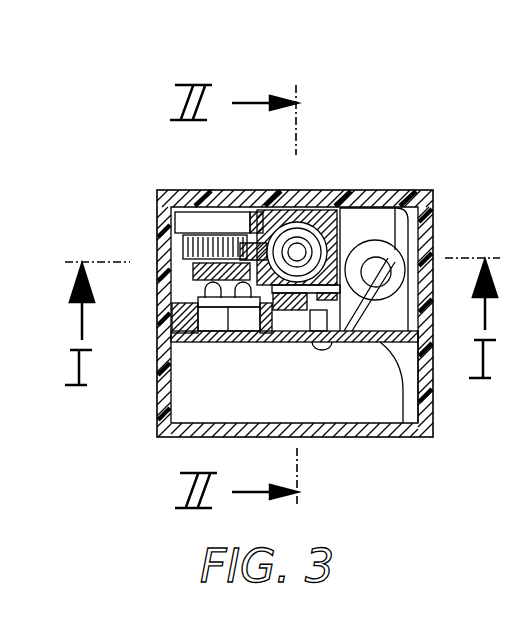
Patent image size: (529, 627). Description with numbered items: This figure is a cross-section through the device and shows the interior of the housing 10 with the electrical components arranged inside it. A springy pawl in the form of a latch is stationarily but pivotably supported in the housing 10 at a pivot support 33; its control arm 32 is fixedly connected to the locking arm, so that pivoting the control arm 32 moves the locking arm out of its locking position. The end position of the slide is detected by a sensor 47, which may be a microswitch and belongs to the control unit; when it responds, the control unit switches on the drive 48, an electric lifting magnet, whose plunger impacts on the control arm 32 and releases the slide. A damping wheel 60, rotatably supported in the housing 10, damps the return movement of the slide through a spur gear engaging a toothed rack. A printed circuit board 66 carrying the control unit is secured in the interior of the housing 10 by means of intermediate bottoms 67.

The housing 10 is at (381, 182).
The control arm 32 is at (432, 357).
The pivot support 33 is at (323, 348).
The sensor 47 is at (240, 318).
The drive 48 is at (417, 188).
The damping wheel 60 is at (207, 212).
The printed circuit board 66 is at (398, 437).
The intermediate bottoms 67 is at (173, 330).